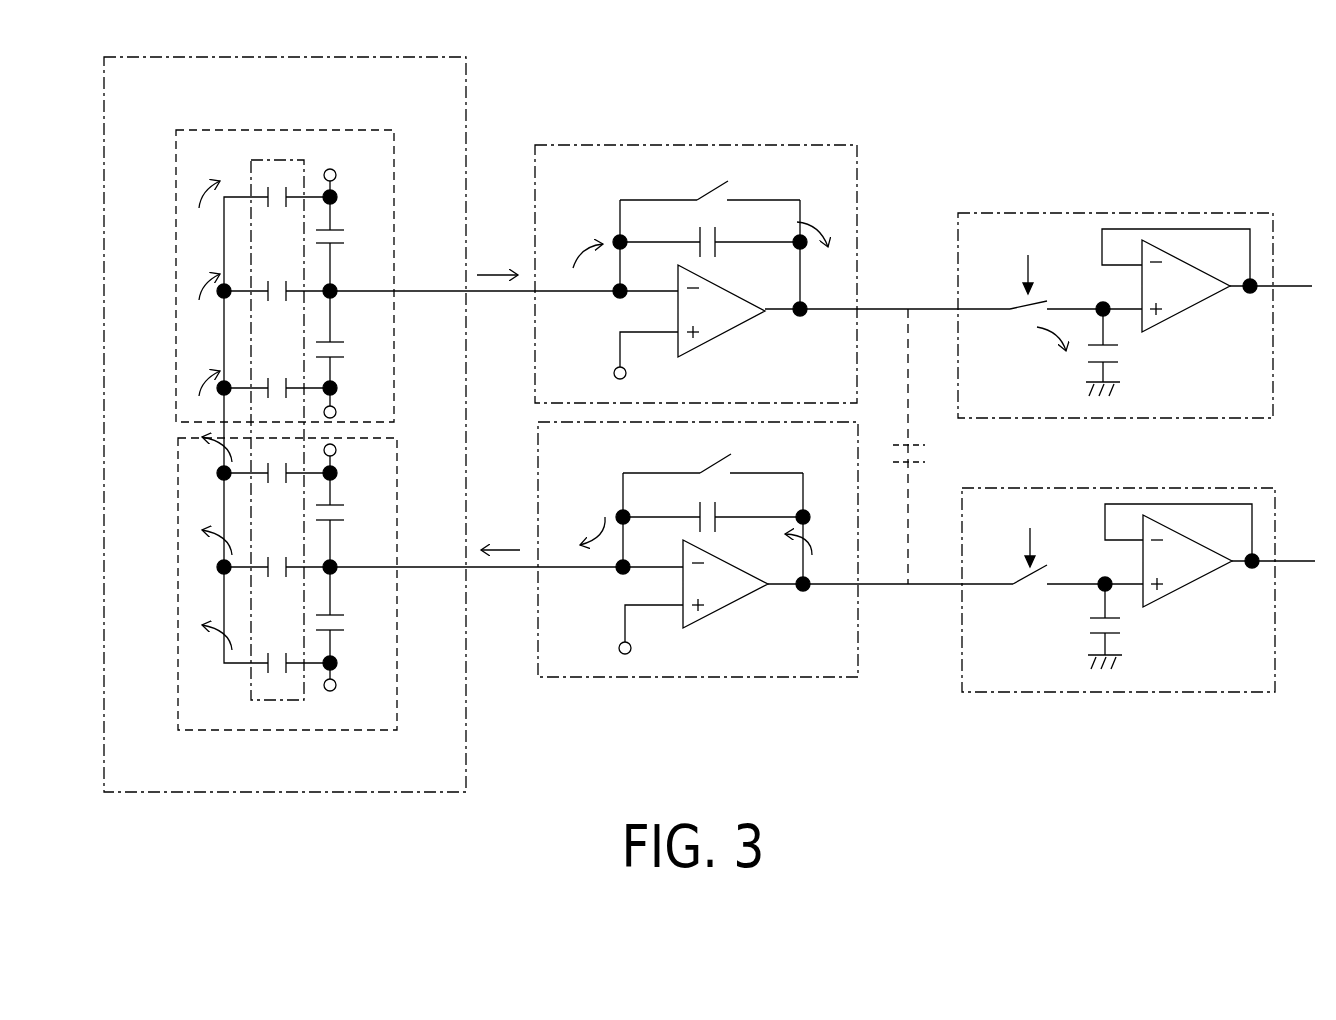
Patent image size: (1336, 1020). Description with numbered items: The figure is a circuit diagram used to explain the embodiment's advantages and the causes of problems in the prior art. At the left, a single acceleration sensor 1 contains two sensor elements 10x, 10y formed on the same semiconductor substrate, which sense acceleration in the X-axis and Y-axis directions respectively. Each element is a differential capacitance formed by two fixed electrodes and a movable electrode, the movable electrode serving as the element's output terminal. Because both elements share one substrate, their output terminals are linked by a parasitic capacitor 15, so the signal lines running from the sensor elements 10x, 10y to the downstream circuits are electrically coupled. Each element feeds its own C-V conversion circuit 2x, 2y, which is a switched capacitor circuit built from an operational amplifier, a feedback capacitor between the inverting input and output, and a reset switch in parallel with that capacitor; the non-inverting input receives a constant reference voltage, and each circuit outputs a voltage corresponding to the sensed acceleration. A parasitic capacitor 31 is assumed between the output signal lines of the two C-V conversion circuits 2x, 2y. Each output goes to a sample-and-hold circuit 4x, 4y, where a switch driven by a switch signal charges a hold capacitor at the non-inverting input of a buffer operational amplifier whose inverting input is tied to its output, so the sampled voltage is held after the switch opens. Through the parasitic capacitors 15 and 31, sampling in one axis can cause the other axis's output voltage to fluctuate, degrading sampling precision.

The acceleration sensor 1 is at (372, 56).
The parasitic capacitor 15 is at (262, 150).
The sensor element 10x is at (336, 128).
The sensor element 10y is at (340, 733).
The C-V conversion circuit 2x is at (769, 144).
The C-V conversion circuit 2y is at (773, 678).
The parasitic capacitor 31 is at (922, 451).
The sample-and-hold circuit 4x is at (1276, 243).
The sample-and-hold circuit 4y is at (1278, 512).